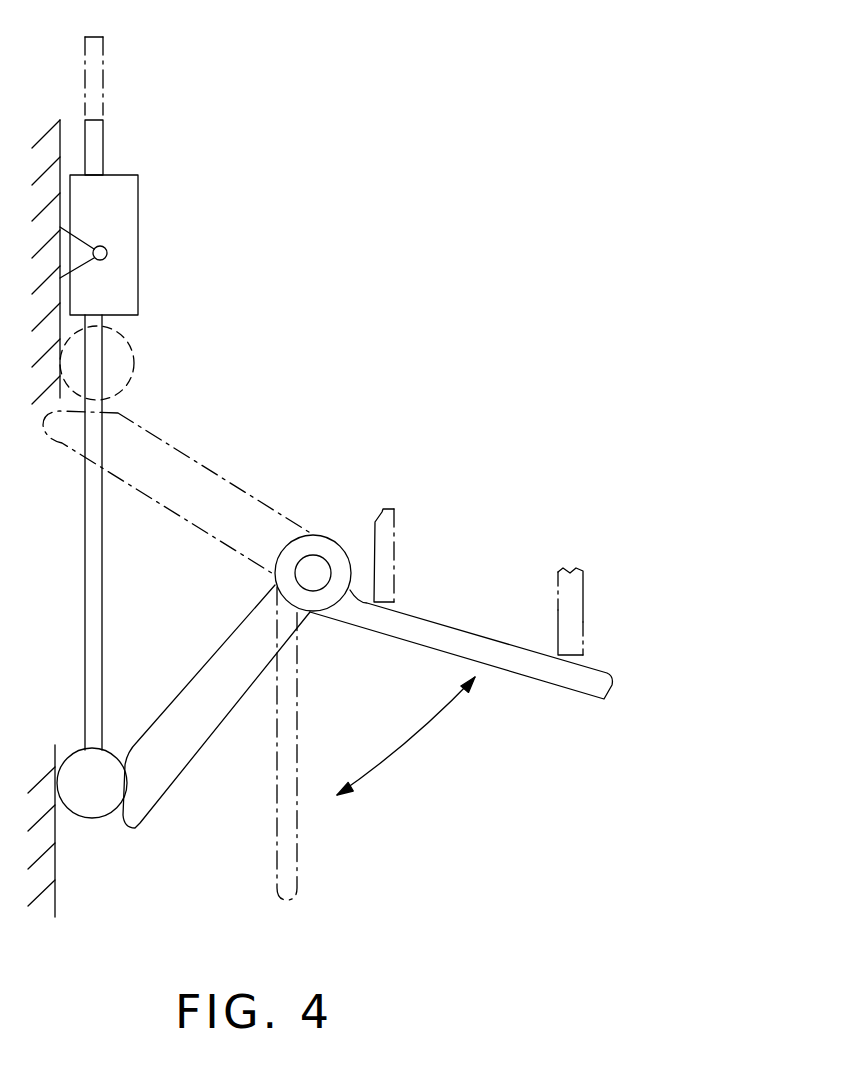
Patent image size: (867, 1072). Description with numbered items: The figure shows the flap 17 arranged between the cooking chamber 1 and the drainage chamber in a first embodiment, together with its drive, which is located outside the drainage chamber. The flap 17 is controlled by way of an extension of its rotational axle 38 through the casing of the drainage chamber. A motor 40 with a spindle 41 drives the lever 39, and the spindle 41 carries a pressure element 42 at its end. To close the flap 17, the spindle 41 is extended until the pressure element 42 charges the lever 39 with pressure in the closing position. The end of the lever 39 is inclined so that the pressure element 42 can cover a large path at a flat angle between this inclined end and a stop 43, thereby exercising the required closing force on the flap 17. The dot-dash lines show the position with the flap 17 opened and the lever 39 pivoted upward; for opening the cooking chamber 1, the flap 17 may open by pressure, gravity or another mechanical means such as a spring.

The cooking chamber 1 is at (560, 612).
The flap 17 is at (590, 682).
The rotational axle 38 is at (317, 568).
The lever 39 is at (213, 472).
The motor 40 is at (127, 215).
The spindle 41 is at (90, 520).
The pressure element 42 is at (80, 762).
The stop 43 is at (57, 842).